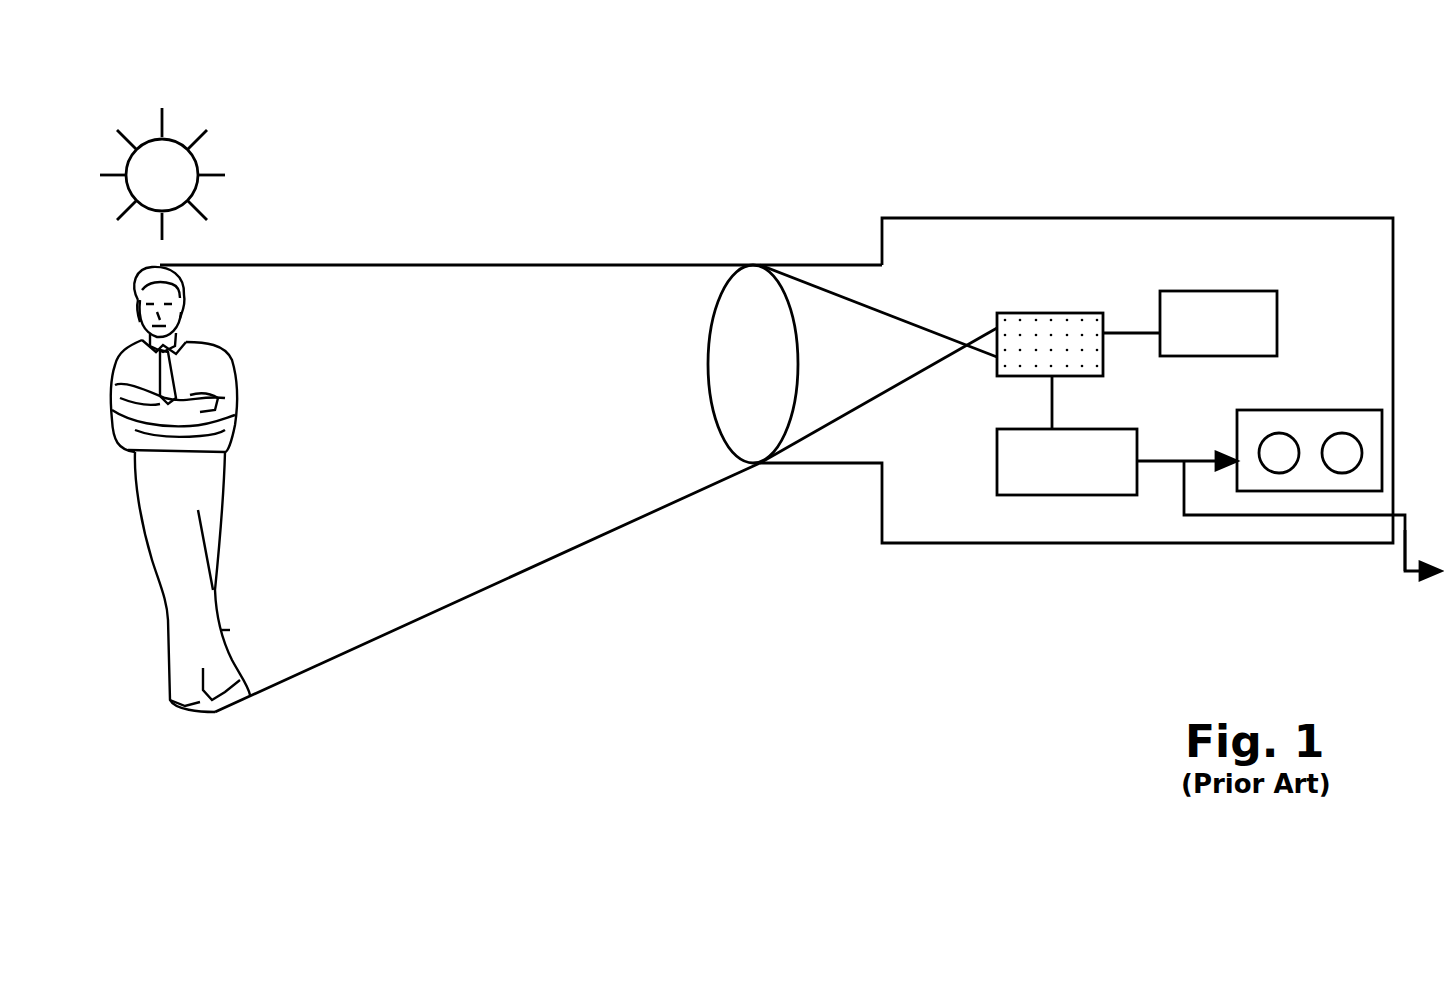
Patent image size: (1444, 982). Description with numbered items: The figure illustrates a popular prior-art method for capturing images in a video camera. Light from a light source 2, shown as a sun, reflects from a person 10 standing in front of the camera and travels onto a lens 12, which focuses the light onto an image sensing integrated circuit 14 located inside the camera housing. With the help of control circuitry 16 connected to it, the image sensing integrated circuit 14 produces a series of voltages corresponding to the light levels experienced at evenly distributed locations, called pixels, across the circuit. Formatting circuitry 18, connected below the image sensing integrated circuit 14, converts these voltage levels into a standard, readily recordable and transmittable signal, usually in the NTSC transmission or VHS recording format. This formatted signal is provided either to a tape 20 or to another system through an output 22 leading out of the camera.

The light source 2 is at (196, 153).
The person 10 is at (218, 518).
The lens 12 is at (746, 440).
The image sensing integrated circuit 14 is at (1016, 313).
The control circuitry 16 is at (1248, 291).
The formatting circuitry 18 is at (1107, 429).
The tape 20 is at (1335, 418).
The output 22 is at (1410, 536).